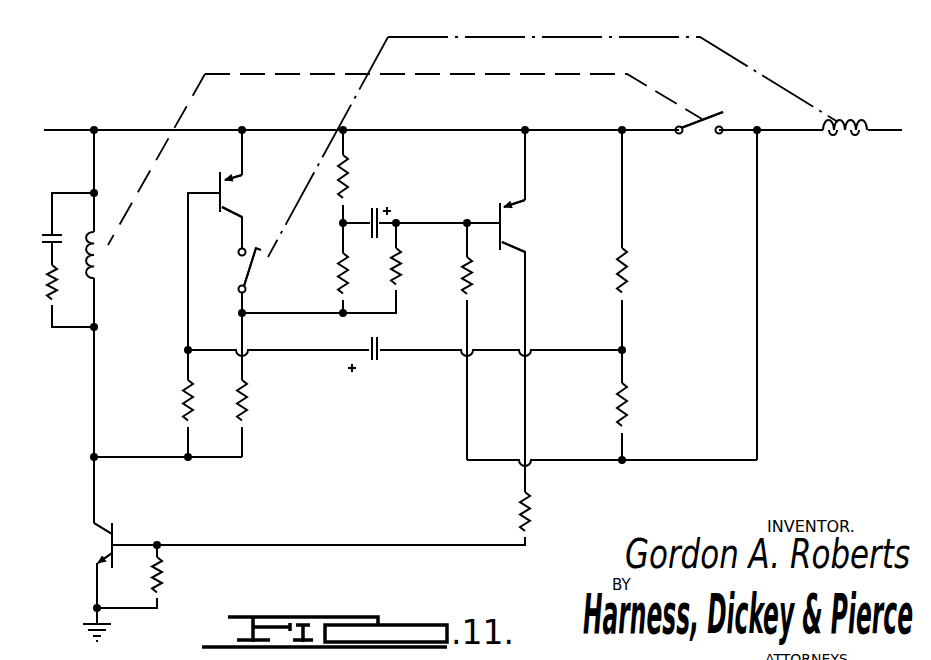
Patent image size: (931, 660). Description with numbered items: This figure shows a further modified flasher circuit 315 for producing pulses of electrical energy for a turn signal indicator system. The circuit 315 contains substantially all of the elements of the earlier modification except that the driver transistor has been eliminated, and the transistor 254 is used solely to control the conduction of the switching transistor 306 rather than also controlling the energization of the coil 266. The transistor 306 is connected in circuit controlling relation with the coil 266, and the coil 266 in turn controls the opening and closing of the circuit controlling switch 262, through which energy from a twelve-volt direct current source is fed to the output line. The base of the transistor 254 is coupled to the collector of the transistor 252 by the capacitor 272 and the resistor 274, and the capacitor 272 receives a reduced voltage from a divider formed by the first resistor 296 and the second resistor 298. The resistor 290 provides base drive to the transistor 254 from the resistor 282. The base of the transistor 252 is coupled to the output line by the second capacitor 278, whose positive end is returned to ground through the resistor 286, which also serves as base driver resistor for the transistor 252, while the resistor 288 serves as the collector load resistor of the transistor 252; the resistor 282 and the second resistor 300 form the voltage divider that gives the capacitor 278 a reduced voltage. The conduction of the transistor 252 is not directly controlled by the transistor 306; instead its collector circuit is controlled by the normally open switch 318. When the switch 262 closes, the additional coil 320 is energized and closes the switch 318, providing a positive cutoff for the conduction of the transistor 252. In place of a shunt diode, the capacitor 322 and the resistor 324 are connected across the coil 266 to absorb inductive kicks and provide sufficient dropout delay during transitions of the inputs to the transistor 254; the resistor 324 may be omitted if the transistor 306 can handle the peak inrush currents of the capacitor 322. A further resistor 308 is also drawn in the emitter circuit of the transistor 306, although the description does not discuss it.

The capacitor 322 is at (64, 236).
The resistor 324 is at (56, 300).
The coil 266 is at (97, 270).
The transistor 252 is at (226, 181).
The first resistor 296 is at (347, 168).
The capacitor 272 is at (394, 203).
The second resistor 298 is at (340, 263).
The switch 318 is at (256, 282).
The resistor 274 is at (402, 289).
The resistor 290 is at (459, 268).
The transistor 254 is at (505, 231).
The resistor 282 is at (625, 271).
The circuit controlling switch 262 is at (701, 141).
The additional coil 320 is at (834, 138).
The second resistor 300 is at (624, 391).
The resistor 286 is at (185, 403).
The resistor 288 is at (248, 404).
The second capacitor 278 is at (371, 364).
The circuit 315 is at (390, 468).
The resistor 308 is at (356, 530).
The switching transistor 306 is at (114, 538).